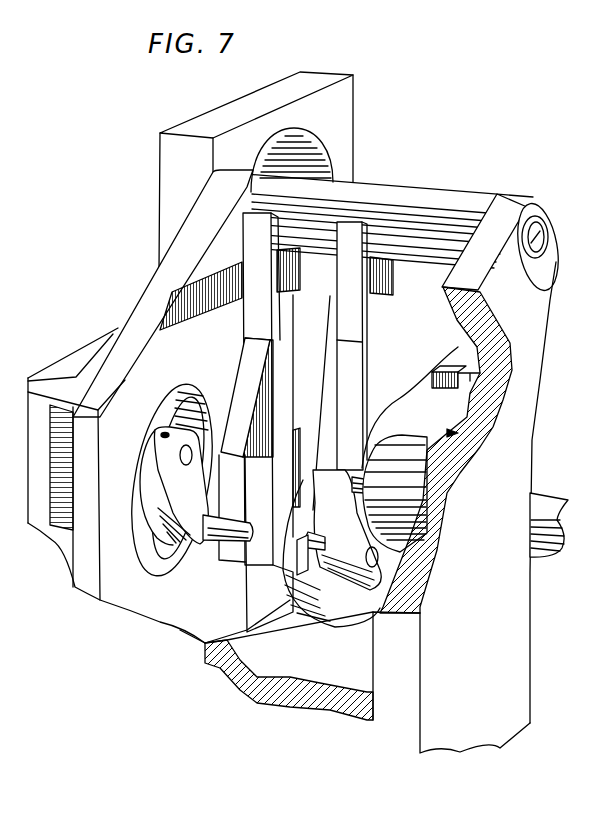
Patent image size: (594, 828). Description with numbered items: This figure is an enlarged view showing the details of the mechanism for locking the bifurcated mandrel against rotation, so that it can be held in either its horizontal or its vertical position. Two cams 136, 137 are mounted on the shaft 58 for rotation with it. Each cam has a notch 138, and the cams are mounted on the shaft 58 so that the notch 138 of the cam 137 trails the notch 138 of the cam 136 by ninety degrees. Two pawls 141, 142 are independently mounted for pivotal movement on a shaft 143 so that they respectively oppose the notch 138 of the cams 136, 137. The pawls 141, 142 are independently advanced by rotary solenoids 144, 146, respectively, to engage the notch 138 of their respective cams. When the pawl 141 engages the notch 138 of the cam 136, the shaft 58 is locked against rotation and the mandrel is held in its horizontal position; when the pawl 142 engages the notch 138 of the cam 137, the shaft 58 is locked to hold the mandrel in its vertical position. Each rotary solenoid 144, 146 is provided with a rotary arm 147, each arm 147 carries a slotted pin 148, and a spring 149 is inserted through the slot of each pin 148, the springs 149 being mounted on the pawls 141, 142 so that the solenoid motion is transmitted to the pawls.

The shaft 58 is at (532, 493).
The cam 136 is at (361, 618).
The cam 137 is at (476, 371).
The notch 138 is at (433, 374).
The pawl 141 is at (300, 325).
The pawl 142 is at (390, 335).
The shaft 143 is at (536, 252).
The rotary solenoid 144 is at (158, 425).
The rotary solenoid 146 is at (418, 471).
The rotary arm 147 is at (204, 498).
The slotted pin 148 is at (235, 550).
The spring 149 is at (248, 363).